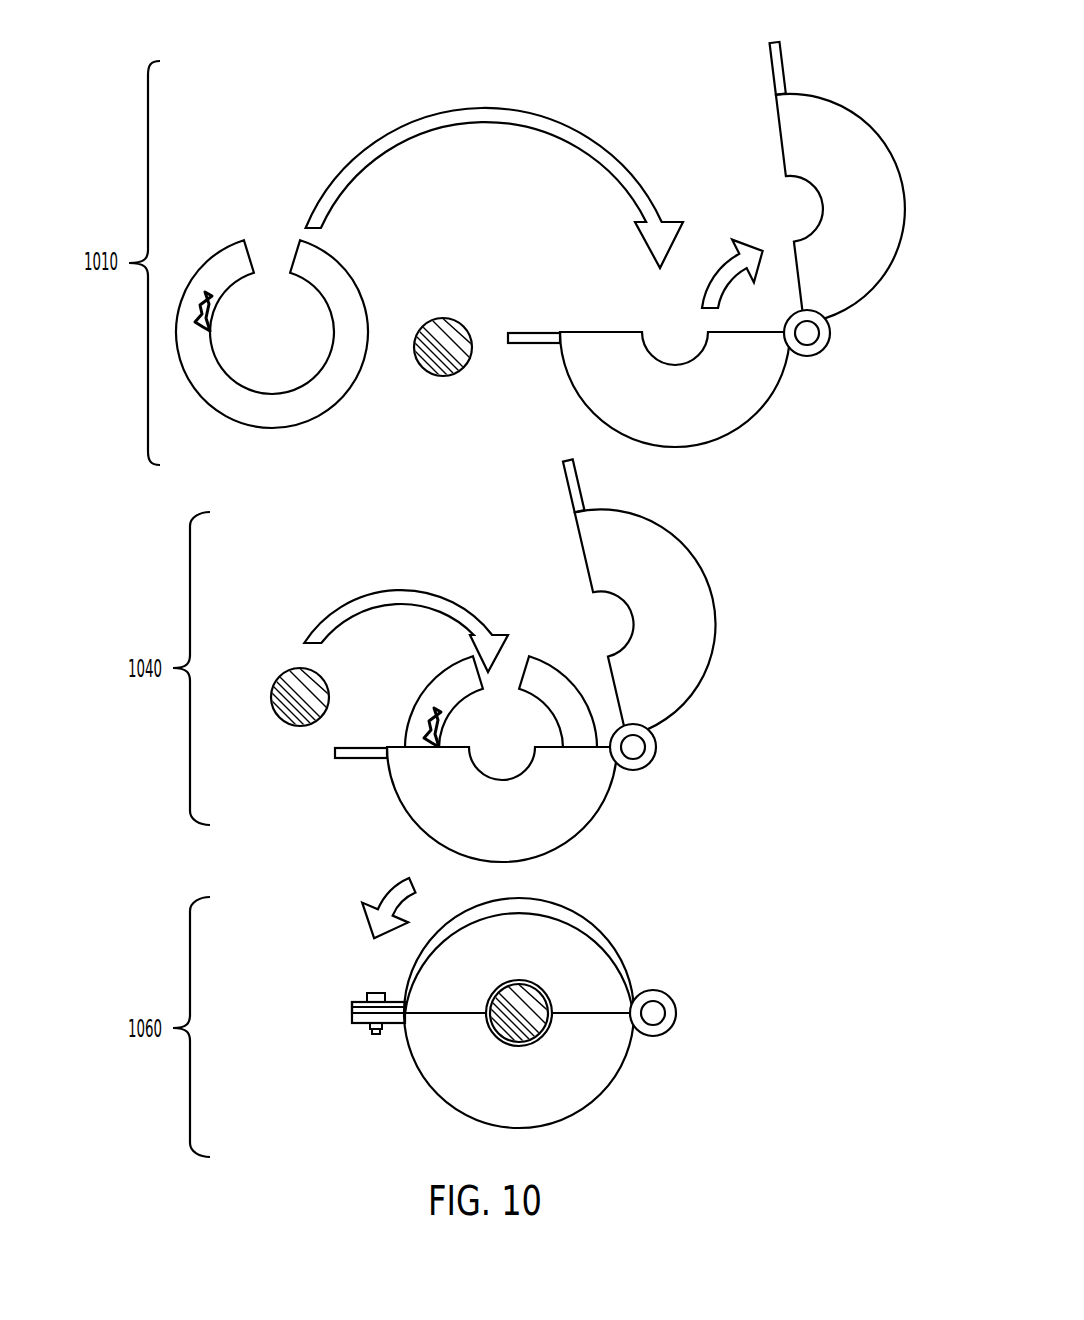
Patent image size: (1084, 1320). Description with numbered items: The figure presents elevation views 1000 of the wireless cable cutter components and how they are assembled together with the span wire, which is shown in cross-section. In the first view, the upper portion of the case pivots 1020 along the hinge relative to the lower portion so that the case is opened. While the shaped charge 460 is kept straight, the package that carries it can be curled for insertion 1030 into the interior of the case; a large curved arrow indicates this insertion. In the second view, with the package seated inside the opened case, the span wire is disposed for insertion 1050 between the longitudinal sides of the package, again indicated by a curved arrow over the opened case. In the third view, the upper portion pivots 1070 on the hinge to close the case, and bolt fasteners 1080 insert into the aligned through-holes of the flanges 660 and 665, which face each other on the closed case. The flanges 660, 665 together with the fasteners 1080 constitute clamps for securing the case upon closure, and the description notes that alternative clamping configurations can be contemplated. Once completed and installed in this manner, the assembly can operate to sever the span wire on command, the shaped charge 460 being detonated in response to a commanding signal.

The elevation views 1000 is at (318, 90).
The pivoting of the upper portion 1020 is at (703, 296).
The insertion of the package 1030 is at (340, 162).
The insertion of the span wire 1050 is at (363, 595).
The pivoting to close the case 1070 is at (389, 889).
The bolt fasteners 1080 is at (376, 992).
The shaped charge 460 is at (225, 414).
The flange 660 is at (364, 1023).
The flange 665 is at (352, 1004).